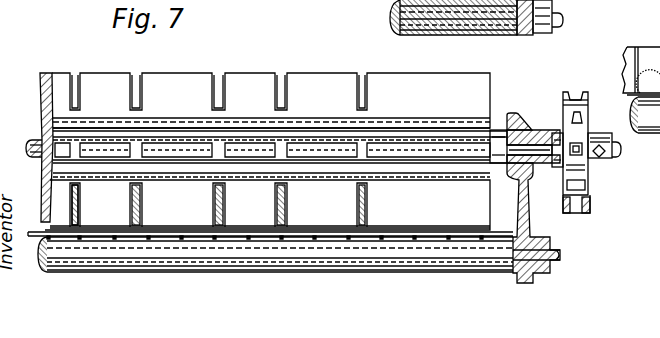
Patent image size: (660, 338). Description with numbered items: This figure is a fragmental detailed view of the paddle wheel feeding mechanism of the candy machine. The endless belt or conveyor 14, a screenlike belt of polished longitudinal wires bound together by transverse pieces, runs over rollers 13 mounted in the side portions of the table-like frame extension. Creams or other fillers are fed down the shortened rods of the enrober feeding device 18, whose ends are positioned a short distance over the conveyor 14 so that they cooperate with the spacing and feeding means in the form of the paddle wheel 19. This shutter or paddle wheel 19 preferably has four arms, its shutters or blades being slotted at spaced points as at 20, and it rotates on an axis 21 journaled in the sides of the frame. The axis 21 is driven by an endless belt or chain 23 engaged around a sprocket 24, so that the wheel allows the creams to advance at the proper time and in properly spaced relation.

The rollers 13 is at (402, 10).
The endless belt or conveyor 14 is at (372, 244).
The enrober feeding device rods 18 is at (213, 197).
The paddle wheel 19 is at (496, 92).
The slots 20 is at (280, 80).
The axis 21 is at (531, 152).
The endless belt or chain 23 is at (589, 213).
The sprocket 24 is at (587, 194).